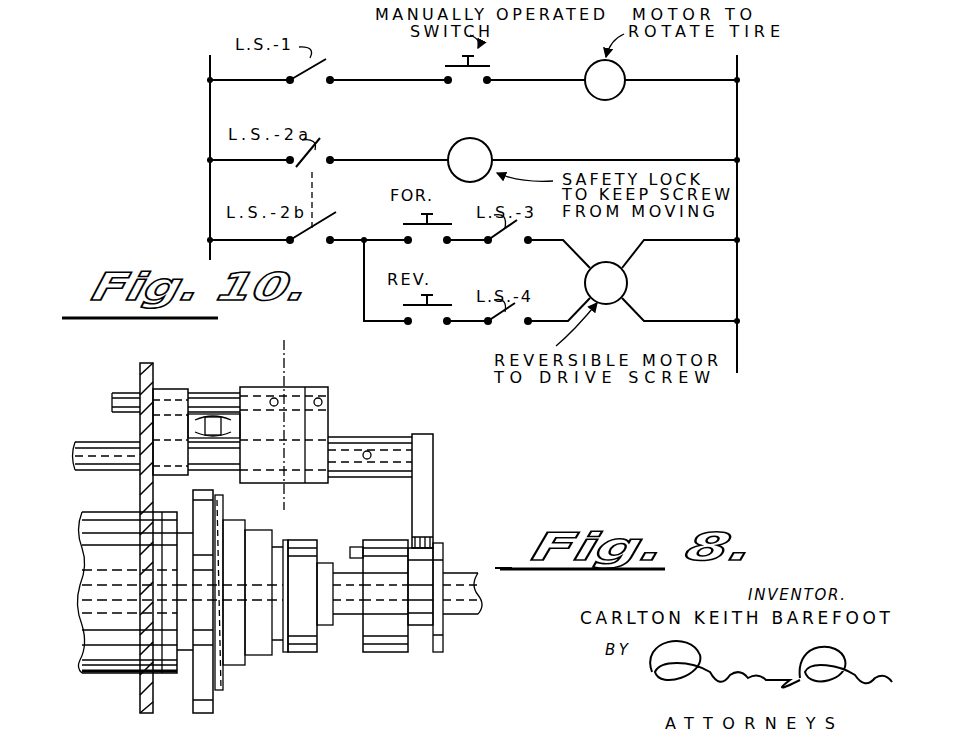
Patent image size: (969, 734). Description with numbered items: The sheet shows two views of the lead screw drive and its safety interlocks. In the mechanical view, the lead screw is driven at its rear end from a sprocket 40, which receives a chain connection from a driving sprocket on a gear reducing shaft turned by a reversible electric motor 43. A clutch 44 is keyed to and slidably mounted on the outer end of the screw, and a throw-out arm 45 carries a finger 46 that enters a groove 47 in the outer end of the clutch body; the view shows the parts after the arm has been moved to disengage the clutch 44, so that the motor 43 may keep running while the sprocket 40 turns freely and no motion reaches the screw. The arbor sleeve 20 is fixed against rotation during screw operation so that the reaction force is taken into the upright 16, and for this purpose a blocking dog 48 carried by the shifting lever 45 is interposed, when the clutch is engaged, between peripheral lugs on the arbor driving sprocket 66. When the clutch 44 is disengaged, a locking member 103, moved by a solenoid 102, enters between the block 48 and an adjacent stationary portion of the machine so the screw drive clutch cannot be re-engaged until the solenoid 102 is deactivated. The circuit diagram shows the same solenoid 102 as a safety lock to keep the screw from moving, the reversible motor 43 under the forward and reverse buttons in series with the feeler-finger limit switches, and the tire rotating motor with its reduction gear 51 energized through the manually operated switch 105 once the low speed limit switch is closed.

In FIG. 10, the manually operated switch 105 is at (445, 60).
In FIG. 10, the reduction gear 51 is at (627, 70).
In FIG. 10, the solenoid 102 is at (487, 146).
In FIG. 8, the solenoid 102 is at (188, 398).
In FIG. 10, the reversible electric motor 43 is at (630, 283).
In FIG. 8, the locking member 103 is at (213, 413).
In FIG. 8, the blocking dog 48 is at (300, 385).
In FIG. 8, the upright 16 is at (140, 424).
In FIG. 8, the throw-out arm 45 is at (124, 472).
In FIG. 8, the arbor sleeve 20 is at (112, 676).
In FIG. 8, the arbor driving sprocket 66 is at (222, 678).
In FIG. 8, the sprocket 40 is at (290, 545).
In FIG. 8, the clutch 44 is at (340, 650).
In FIG. 8, the finger 46 is at (433, 542).
In FIG. 8, the groove 47 is at (440, 655).